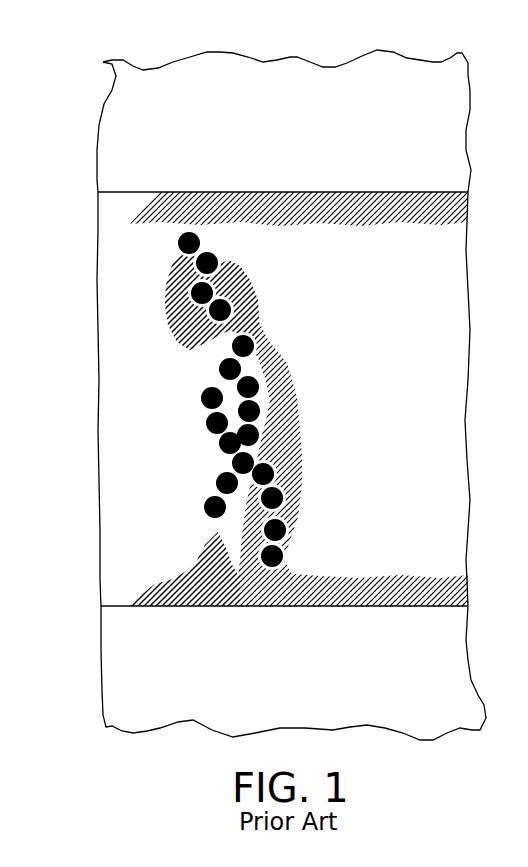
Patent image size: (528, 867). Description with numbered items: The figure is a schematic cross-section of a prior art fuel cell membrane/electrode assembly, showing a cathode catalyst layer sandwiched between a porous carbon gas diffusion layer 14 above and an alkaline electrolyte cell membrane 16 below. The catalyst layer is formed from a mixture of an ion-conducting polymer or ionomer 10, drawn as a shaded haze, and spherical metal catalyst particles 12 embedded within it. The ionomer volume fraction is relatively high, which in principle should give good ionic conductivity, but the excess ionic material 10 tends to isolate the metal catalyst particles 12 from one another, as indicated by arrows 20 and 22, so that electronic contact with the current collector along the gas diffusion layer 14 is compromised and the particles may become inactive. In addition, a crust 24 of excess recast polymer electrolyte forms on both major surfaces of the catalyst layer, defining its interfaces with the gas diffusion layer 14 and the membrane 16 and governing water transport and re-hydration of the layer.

The ion-conducting polymer/ionomer 10 is at (294, 417).
The metal catalyst particles 12 is at (234, 484).
The gas diffusion layer 14 is at (235, 74).
The membrane 16 is at (465, 680).
The arrow 20 is at (284, 312).
The arrow 22 is at (175, 548).
The crust 24 is at (450, 212).